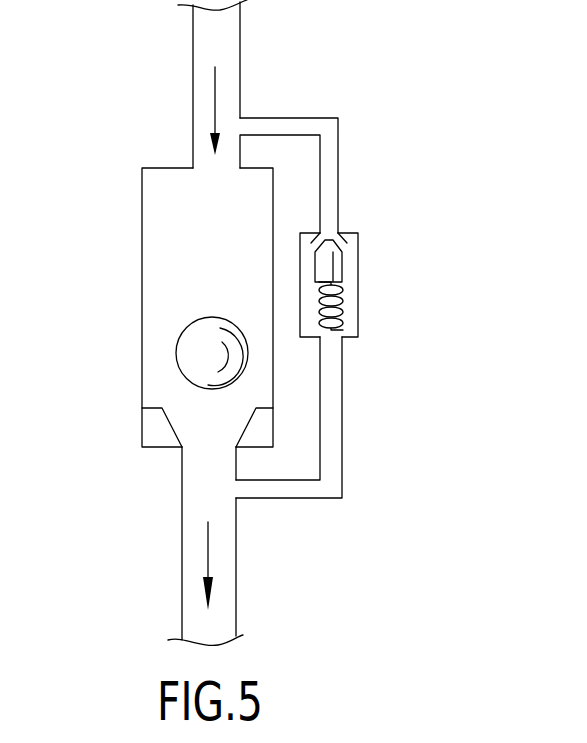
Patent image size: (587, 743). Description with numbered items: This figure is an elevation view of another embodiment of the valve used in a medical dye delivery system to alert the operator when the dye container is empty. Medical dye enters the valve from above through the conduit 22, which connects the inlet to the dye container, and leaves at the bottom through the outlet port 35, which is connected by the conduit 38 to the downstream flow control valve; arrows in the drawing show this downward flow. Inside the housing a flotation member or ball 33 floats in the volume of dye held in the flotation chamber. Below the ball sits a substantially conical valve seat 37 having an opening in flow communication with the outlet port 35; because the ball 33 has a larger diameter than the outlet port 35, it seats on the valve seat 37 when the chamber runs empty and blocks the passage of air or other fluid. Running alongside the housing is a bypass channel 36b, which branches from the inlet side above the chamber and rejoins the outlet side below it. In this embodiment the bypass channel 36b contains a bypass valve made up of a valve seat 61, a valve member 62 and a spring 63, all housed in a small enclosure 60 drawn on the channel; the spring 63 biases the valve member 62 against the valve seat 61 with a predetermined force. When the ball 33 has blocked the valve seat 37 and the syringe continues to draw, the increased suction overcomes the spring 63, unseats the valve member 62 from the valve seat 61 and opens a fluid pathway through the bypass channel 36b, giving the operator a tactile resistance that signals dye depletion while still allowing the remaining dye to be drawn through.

The conduit 22 is at (240, 33).
The flotation member or ball 33 is at (176, 354).
The outlet port 35 is at (165, 448).
The valve seat 37 is at (171, 425).
The bypass channel 36b is at (338, 168).
The conduit 38 is at (236, 563).
The check valve housing 60 is at (358, 308).
The valve seat 61 is at (354, 232).
The valve member 62 is at (342, 267).
The spring 63 is at (343, 325).